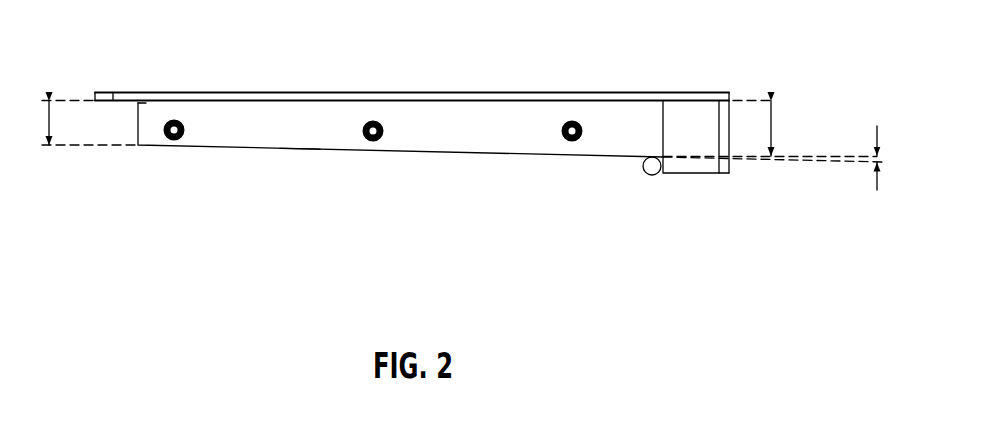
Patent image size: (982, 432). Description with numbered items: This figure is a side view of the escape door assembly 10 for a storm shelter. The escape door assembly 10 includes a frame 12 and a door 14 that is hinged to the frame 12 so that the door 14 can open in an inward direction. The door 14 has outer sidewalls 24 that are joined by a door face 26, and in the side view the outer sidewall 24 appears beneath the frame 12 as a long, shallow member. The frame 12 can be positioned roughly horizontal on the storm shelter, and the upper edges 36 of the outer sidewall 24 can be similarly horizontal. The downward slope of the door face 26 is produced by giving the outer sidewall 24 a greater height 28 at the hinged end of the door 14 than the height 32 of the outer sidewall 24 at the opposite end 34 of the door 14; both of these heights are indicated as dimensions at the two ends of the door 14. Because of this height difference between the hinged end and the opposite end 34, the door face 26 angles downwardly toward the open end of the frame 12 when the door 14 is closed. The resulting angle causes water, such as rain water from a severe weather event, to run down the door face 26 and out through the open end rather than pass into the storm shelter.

The escape door assembly 10 is at (143, 32).
The frame 12 is at (463, 92).
The door 14 is at (435, 150).
The outer sidewall 24 is at (267, 135).
The door face 26 is at (301, 148).
The height 28 is at (773, 128).
The height 32 is at (48, 123).
The opposite end 34 is at (137, 105).
The upper edges 36 is at (505, 101).